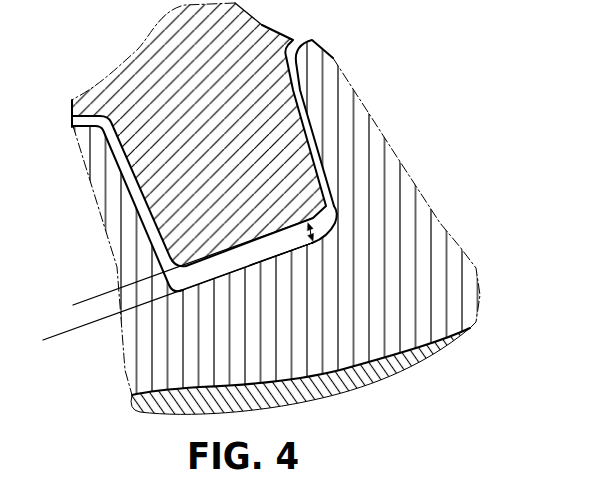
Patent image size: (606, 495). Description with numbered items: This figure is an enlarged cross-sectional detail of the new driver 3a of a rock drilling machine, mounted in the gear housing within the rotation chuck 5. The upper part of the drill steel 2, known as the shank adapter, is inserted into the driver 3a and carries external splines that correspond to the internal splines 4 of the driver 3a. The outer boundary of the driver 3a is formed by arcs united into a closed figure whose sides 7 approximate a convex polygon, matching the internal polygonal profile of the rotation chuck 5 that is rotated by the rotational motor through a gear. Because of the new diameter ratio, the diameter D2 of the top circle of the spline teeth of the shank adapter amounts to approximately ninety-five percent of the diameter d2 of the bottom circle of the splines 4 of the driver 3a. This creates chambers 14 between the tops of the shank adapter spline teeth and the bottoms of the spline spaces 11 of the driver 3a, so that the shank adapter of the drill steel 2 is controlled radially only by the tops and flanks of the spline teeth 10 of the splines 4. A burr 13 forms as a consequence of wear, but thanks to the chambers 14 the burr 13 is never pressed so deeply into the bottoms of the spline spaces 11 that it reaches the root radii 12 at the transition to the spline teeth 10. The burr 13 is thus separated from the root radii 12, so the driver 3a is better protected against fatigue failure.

The drill steel 2 is at (195, 89).
The driver 3a is at (250, 327).
The splines 4 is at (272, 257).
The rotation chuck 5 is at (203, 400).
The sides 7 is at (355, 355).
The spline teeth 10 is at (304, 50).
The spline spaces 11 is at (295, 244).
The root radii 12 is at (338, 217).
The burr 13 is at (332, 201).
The chambers 14 is at (314, 237).
The diameter of the top circle of the spline teeth of the shank adapter D2 is at (80, 301).
The diameter of the bottom circle of the splines of the driver d2 is at (53, 336).